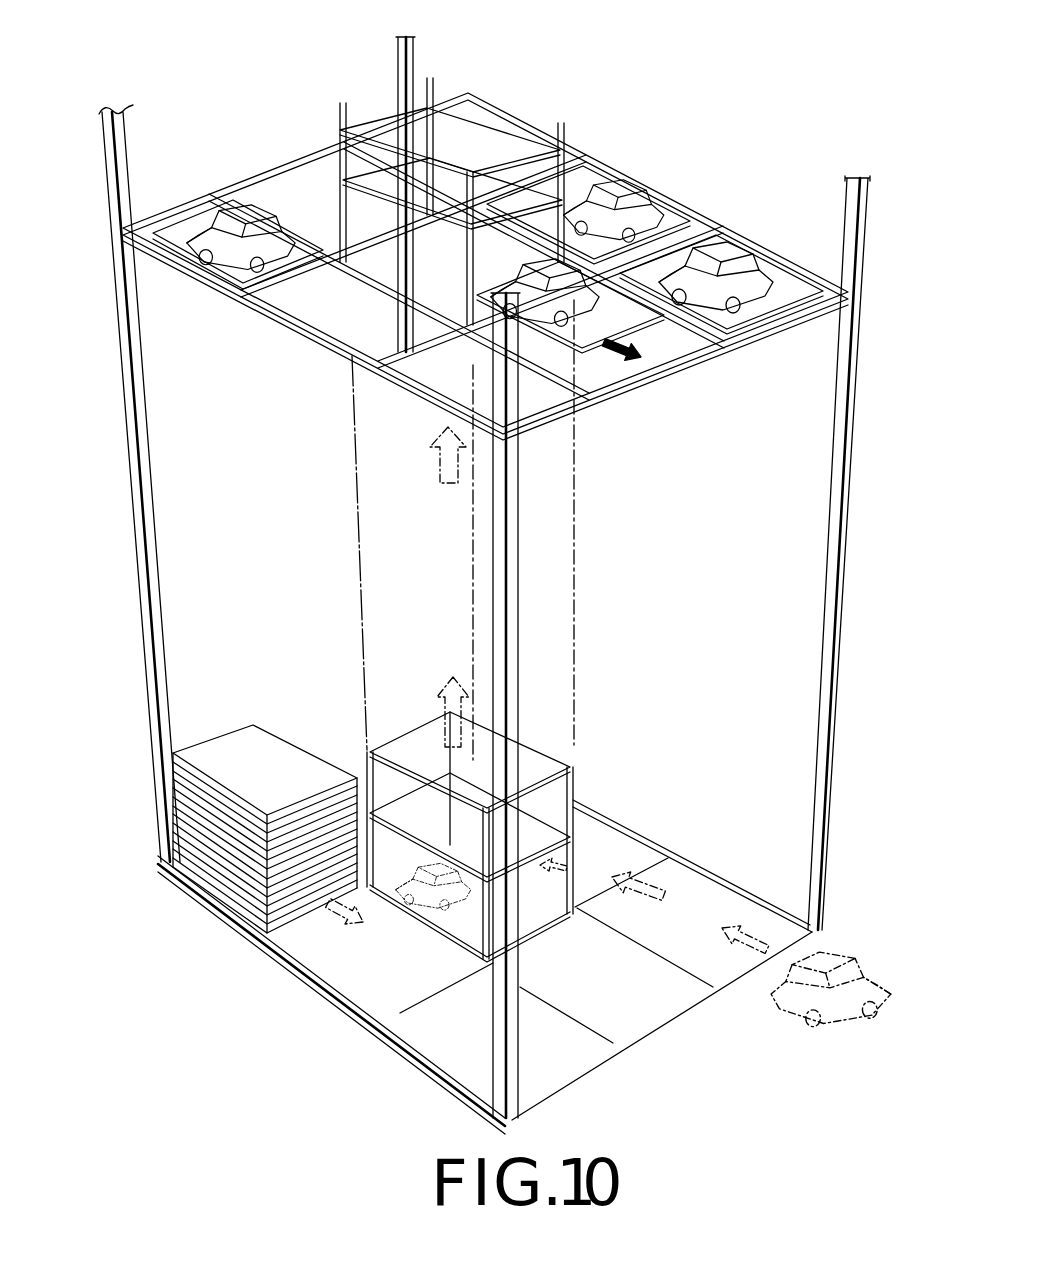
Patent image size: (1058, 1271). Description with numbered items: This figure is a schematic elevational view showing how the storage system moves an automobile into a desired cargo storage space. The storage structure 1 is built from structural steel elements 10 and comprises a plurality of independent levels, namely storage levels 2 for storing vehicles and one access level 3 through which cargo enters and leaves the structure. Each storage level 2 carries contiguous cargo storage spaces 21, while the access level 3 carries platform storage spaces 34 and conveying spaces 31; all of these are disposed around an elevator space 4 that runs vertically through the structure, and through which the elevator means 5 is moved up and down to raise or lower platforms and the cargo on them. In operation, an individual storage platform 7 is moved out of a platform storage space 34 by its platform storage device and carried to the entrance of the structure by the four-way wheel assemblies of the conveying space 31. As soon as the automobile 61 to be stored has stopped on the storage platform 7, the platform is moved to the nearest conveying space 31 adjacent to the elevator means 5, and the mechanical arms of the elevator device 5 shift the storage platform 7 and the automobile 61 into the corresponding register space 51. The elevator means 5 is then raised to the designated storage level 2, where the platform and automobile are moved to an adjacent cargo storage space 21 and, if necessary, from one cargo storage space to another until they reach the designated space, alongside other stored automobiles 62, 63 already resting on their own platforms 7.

The multistory parking facility 1 is at (508, 577).
The structural steel elements 10 is at (865, 244).
The storage level 2 is at (485, 285).
The cargo storage space 21 is at (637, 353).
The access level 3 is at (485, 967).
The conveying space 31 is at (612, 953).
The platform storage space 34 is at (186, 840).
The elevator space 4 is at (560, 640).
The elevator means 5 is at (448, 526).
The register space 51 is at (455, 135).
The automobile 61 is at (578, 303).
The automobile 62 is at (598, 190).
The automobile 63 is at (726, 257).
The storage platform 7 is at (183, 260).